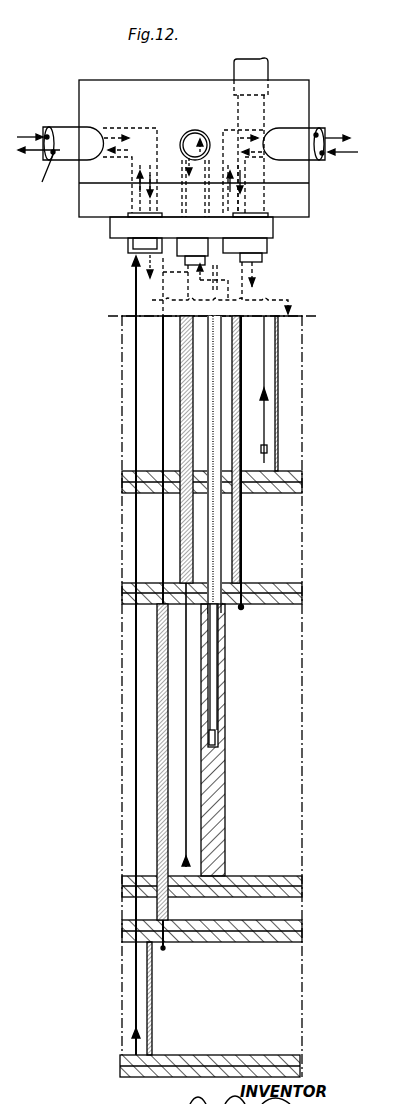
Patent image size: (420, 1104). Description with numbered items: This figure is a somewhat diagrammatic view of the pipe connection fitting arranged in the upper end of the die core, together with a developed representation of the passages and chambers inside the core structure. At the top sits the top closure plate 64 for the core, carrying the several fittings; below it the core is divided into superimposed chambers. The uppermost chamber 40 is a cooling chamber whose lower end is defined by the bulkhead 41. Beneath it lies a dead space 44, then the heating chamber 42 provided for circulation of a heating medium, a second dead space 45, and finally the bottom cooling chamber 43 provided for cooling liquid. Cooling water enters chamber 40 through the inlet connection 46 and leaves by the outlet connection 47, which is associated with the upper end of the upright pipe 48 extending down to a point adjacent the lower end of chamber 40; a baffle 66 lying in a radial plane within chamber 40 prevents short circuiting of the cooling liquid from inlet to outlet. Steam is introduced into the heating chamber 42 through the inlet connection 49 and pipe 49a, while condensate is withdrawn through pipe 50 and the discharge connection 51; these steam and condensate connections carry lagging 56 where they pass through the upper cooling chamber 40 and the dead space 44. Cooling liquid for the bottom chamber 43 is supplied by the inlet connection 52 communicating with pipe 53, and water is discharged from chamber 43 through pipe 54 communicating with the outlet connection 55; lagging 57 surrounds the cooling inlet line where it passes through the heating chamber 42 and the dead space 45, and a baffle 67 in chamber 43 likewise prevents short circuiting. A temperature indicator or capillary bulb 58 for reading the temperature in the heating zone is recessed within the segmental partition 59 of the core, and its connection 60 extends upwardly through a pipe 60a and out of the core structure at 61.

The uppermost chamber 40 is at (268, 368).
The bulkhead 41 is at (287, 470).
The heating chamber 42 is at (273, 717).
The bottom cooling chamber 43 is at (287, 983).
The dead space 44 is at (278, 542).
The dead space 45 is at (287, 910).
The inlet connection 46 is at (52, 125).
The outlet connection 47 is at (200, 153).
The upright pipe 48 is at (187, 245).
The inlet connection 49 is at (326, 157).
The pipe 49a is at (250, 267).
The pipe 50 is at (243, 248).
The discharge connection 51 is at (313, 128).
The inlet connection 52 is at (180, 152).
The pipe 53 is at (148, 273).
The pipe 54 is at (127, 245).
The outlet connection 55 is at (41, 175).
The lagging 56 is at (233, 383).
The lagging 57 is at (158, 732).
The capillary bulb 58 is at (216, 737).
The segmental partition 59 is at (226, 780).
The connection 60 is at (213, 673).
The pipe 60a is at (218, 562).
The exit point of temperature indicator connection 61 is at (269, 68).
The top closure plate 64 is at (303, 203).
The baffle 66 is at (279, 350).
The baffle 67 is at (153, 1020).